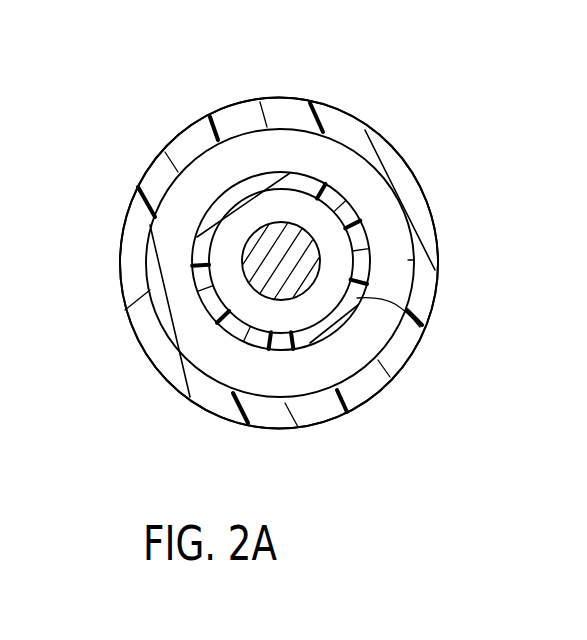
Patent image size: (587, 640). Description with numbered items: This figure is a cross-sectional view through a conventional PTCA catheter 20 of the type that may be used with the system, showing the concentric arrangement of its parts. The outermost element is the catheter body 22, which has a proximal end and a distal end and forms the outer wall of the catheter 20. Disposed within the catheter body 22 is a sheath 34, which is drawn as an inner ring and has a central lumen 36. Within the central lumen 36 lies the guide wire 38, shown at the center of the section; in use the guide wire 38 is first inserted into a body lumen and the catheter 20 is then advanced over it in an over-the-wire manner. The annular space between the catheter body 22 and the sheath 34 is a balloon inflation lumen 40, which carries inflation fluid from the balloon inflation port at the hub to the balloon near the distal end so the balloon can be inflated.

The catheter 20 is at (253, 61).
The catheter body 22 is at (403, 162).
The sheath 34 is at (420, 327).
The central lumen 36 is at (352, 265).
The guide wire 38 is at (252, 262).
The balloon inflation lumen 40 is at (182, 223).